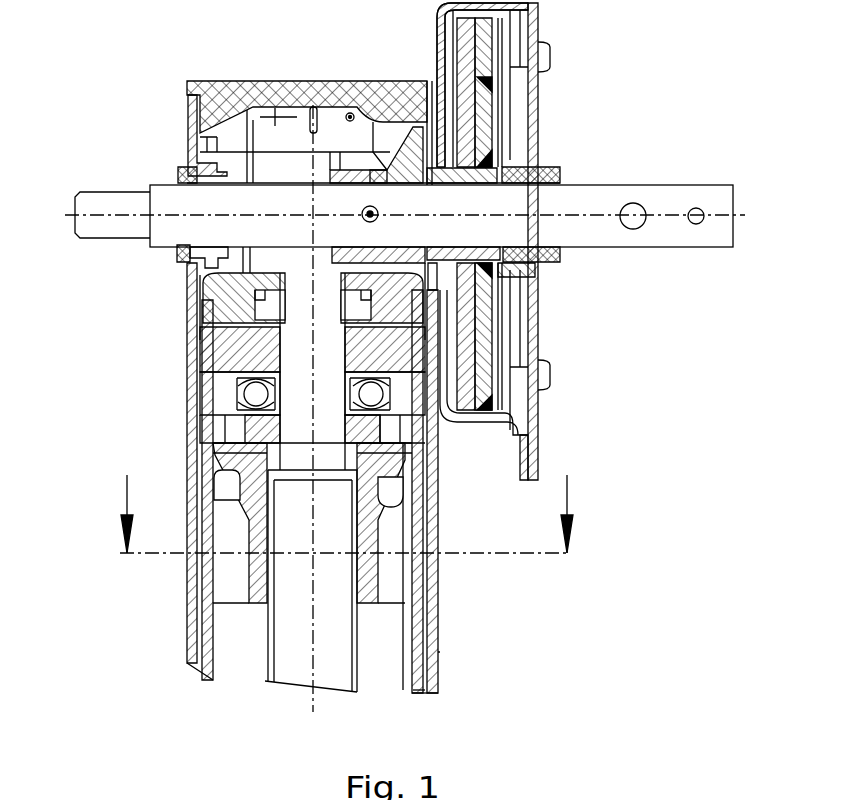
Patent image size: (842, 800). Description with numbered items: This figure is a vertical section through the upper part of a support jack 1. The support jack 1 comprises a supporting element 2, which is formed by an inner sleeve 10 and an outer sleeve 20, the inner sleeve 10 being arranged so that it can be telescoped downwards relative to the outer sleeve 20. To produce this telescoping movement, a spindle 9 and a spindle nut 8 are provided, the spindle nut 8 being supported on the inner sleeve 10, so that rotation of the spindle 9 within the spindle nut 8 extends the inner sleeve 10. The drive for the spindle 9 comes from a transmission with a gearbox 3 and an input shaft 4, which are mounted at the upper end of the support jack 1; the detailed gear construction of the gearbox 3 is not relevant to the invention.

The support jack 1 is at (424, 382).
The supporting element 2 is at (389, 503).
The gearbox 3 is at (533, 418).
The input shaft 4 is at (688, 200).
The spindle nut 8 is at (222, 446).
The spindle 9 is at (268, 666).
The inner sleeve 10 is at (457, 725).
The outer sleeve 20 is at (437, 653).